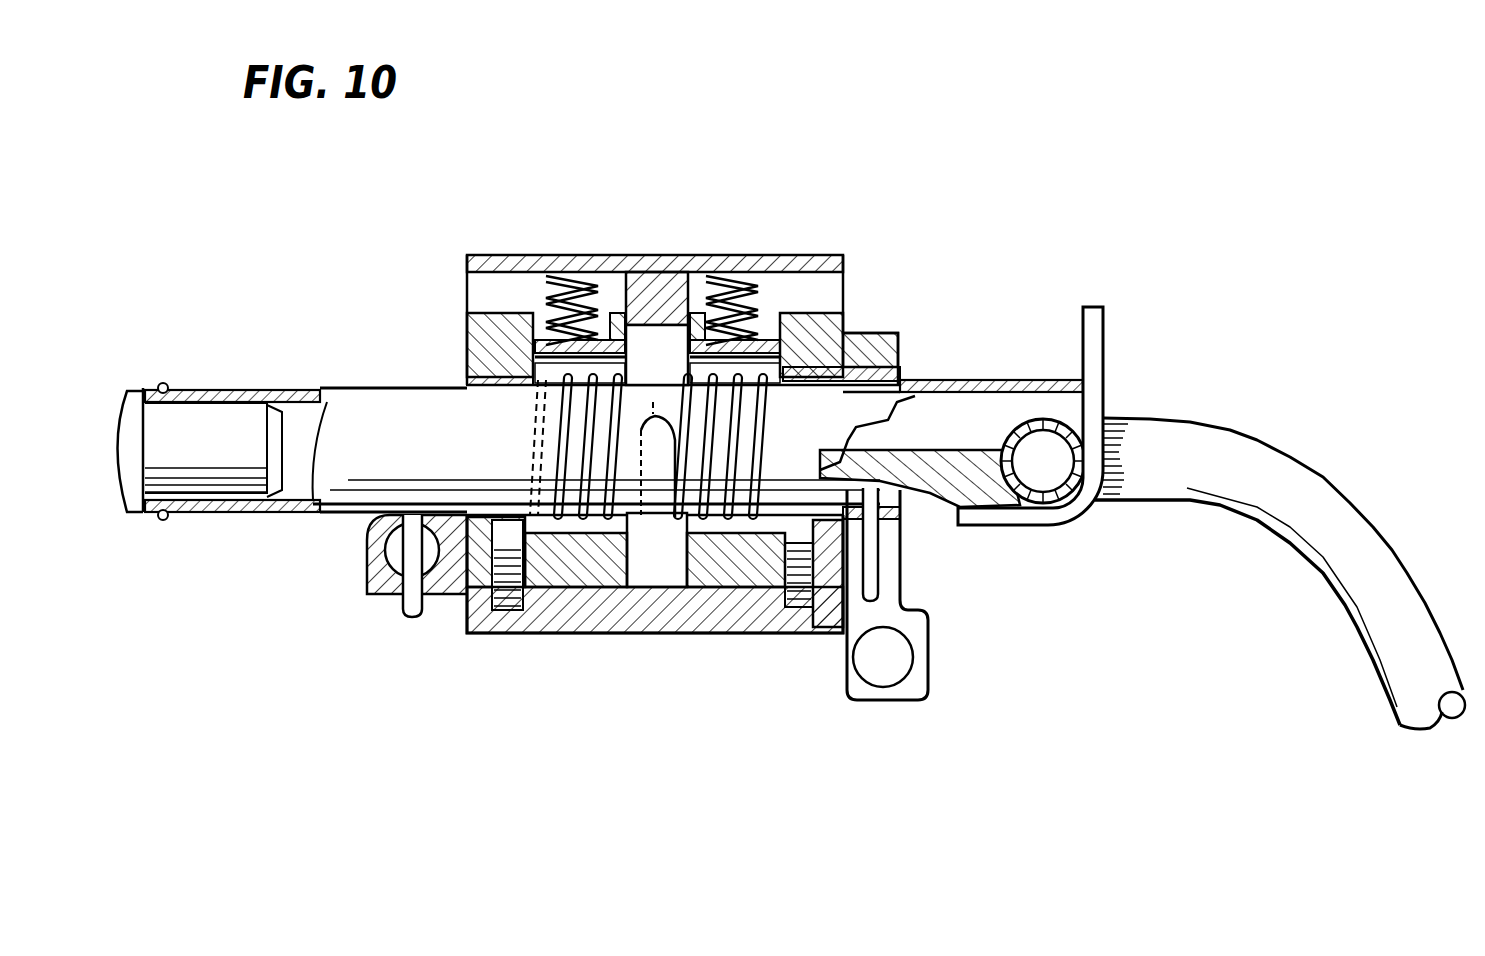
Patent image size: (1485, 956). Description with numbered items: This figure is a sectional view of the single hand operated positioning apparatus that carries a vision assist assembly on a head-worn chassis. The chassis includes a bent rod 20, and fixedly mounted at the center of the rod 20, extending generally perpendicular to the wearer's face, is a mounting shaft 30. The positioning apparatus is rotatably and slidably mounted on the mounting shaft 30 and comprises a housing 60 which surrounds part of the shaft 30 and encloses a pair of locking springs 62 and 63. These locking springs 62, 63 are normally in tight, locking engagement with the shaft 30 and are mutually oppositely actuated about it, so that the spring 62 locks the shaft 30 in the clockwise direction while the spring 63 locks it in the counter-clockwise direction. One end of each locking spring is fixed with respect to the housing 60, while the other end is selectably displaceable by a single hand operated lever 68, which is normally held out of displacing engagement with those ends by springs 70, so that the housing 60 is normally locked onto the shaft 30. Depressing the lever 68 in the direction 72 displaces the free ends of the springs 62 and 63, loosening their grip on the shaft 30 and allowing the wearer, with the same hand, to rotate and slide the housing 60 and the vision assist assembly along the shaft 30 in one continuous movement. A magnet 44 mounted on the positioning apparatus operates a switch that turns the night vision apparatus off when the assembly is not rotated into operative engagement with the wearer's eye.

The rod 20 is at (1033, 420).
The mounting shaft 30 is at (405, 415).
The magnet 44 is at (884, 658).
The housing 60 is at (742, 570).
The locking spring 62 is at (605, 463).
The locking spring 63 is at (788, 398).
The single hand operated lever 68 is at (672, 255).
The springs 70 is at (547, 275).
The direction of lever depression 72 is at (653, 240).